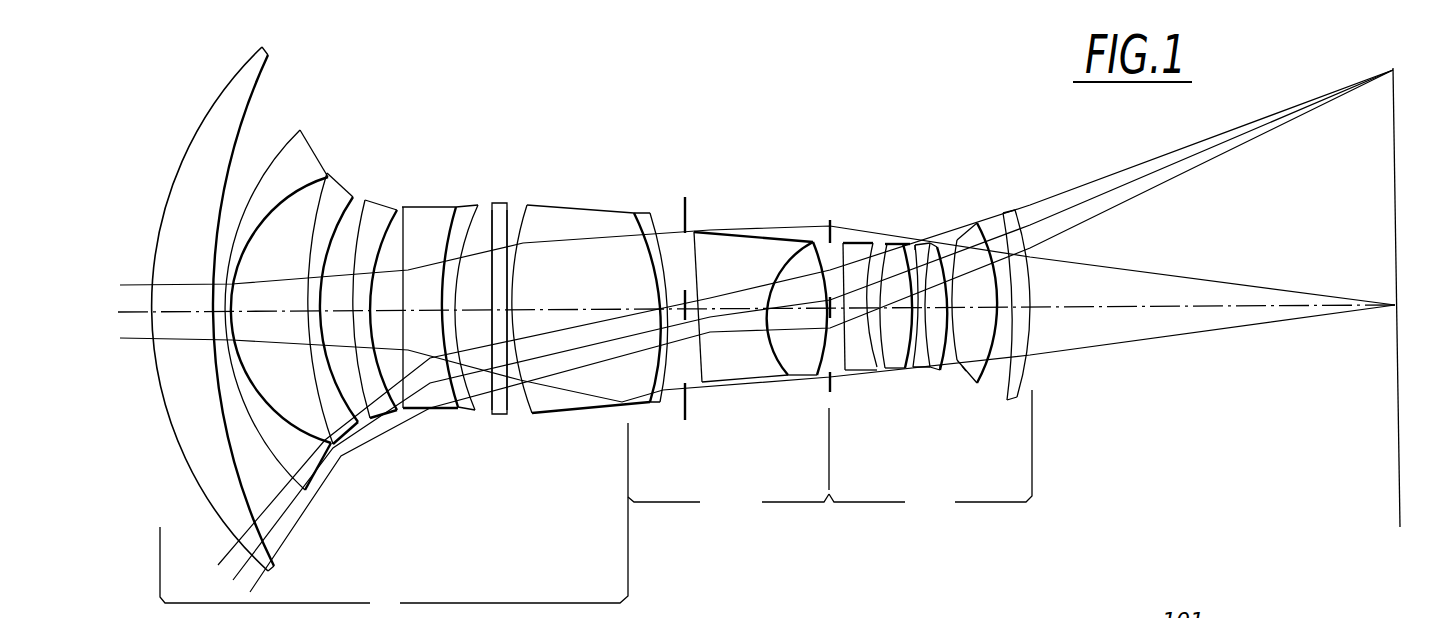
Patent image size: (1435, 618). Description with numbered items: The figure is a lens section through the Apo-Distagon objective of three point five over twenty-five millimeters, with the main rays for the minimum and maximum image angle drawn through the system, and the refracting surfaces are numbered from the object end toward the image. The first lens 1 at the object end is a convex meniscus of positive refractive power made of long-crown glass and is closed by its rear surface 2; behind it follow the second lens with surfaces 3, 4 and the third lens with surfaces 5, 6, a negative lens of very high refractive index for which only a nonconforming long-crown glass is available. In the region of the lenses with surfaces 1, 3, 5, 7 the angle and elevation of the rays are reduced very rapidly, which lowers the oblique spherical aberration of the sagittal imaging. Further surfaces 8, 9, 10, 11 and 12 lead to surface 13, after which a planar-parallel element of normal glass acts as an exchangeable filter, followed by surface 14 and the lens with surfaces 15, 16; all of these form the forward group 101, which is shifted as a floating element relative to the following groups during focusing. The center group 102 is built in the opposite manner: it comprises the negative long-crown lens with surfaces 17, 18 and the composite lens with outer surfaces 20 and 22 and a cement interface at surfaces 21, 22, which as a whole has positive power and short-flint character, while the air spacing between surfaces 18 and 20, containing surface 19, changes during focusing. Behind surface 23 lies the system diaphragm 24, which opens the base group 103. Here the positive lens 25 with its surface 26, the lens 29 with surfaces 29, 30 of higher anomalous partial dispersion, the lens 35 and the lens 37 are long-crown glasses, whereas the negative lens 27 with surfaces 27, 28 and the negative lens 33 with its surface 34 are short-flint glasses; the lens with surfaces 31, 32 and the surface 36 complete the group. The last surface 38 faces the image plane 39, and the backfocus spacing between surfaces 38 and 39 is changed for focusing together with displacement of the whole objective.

The first lens 1 is at (222, 88).
The lens surface 2 is at (264, 65).
The lens surface 3 is at (278, 157).
The lens surface 4 is at (318, 180).
The lens surface 5 is at (350, 197).
The lens surface 6 is at (388, 206).
The lens surface 7 is at (374, 201).
The lens surface 8 is at (400, 207).
The lens surface 9 is at (406, 218).
The lens surface 10 is at (462, 208).
The lens surface 11 is at (480, 206).
The lens surface 12 is at (489, 202).
The lens surface 13 is at (491, 412).
The lens surface 14 is at (508, 412).
The lens surface 15 is at (526, 204).
The lens surface 16 is at (618, 222).
The lens surface 17 is at (636, 212).
The lens surface 18 is at (662, 214).
The lens surface 19 is at (685, 408).
The lens surface 20 is at (718, 386).
The lens surface 21 is at (776, 380).
The lens surface 22 is at (795, 240).
The lens surface 23 is at (808, 240).
The system diaphragm 24 is at (830, 220).
The lens 25 is at (848, 373).
The lens surface 26 is at (871, 371).
The lens 27 is at (886, 244).
The lens surface 28 is at (902, 243).
The lens 29 is at (909, 369).
The lens surface 30 is at (939, 371).
The lens surface 31 is at (914, 244).
The lens surface 32 is at (930, 243).
The lens 33 is at (941, 247).
The lens surface 34 is at (958, 239).
The lens 35 is at (965, 372).
The lens surface 36 is at (978, 222).
The lens 37 is at (1004, 212).
The lens surface 38 is at (1018, 399).
The image plane 39 is at (1399, 444).
The forward group 101 is at (394, 520).
The center group 102 is at (728, 504).
The base group 103 is at (930, 453).